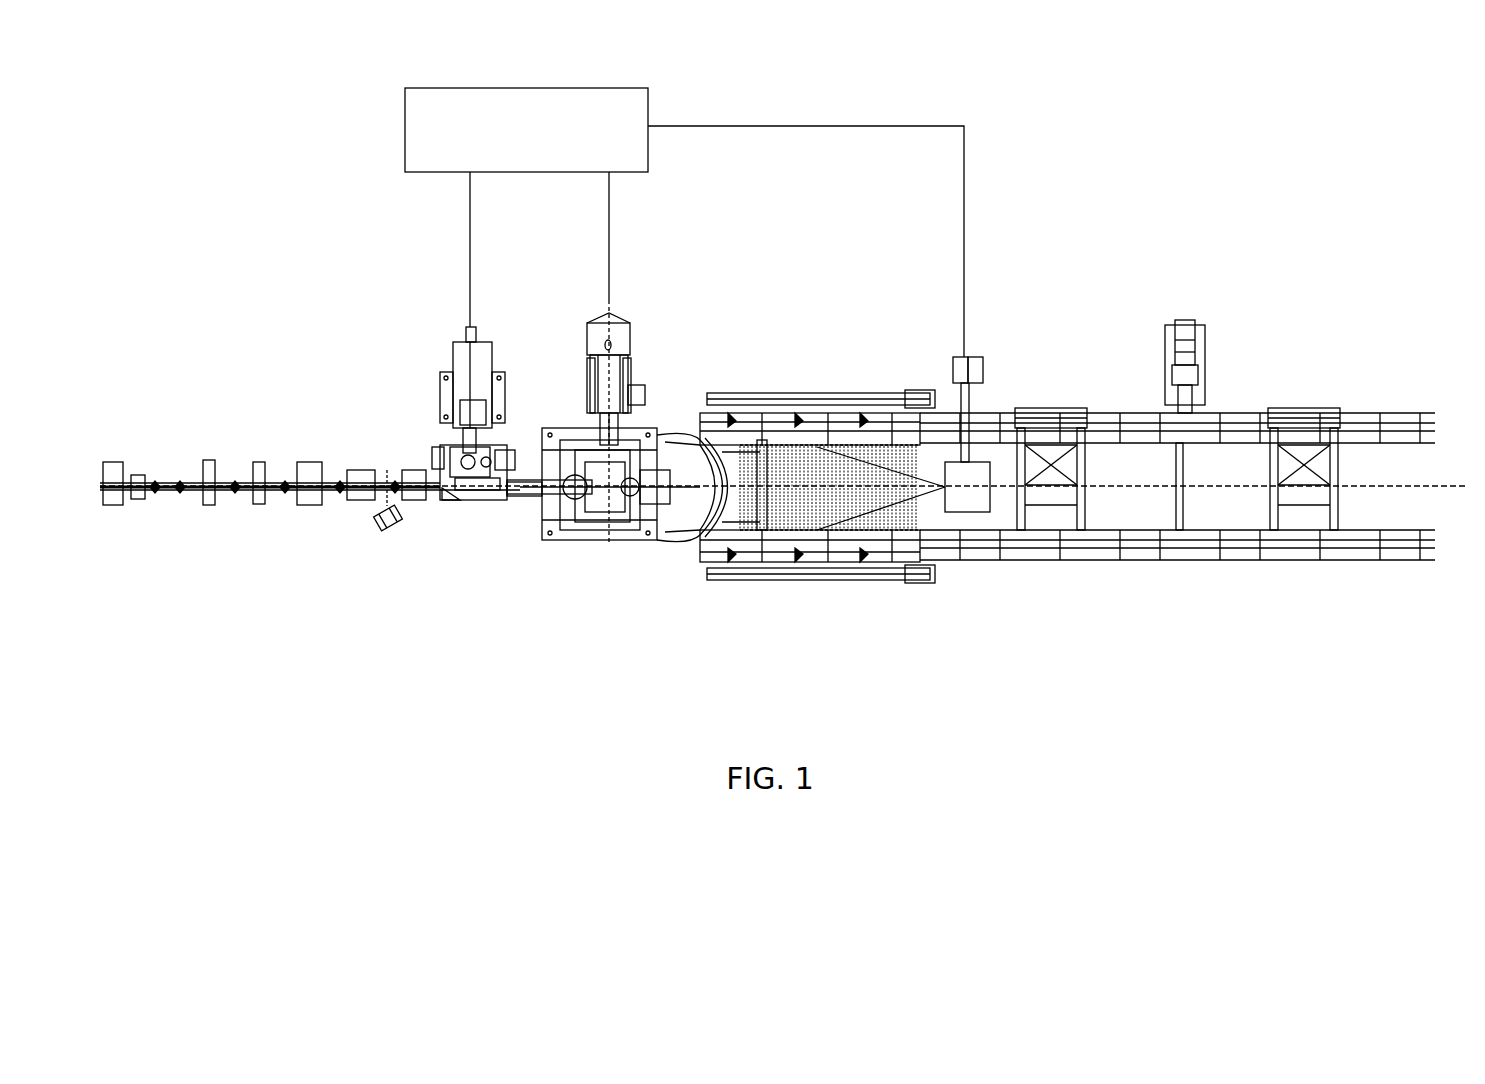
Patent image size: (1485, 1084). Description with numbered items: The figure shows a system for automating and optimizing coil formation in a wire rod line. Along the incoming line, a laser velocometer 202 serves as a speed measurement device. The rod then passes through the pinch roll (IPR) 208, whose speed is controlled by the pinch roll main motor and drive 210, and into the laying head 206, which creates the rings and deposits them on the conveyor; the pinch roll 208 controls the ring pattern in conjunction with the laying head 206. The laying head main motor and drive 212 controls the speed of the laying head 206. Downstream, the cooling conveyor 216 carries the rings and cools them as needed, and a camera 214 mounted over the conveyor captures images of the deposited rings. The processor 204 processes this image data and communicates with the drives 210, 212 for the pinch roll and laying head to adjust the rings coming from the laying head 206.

The laser velocometer 202 is at (370, 533).
The processor 204 is at (684, 222).
The laying head 206 is at (685, 515).
The pinch roll (IPR) 208 is at (461, 485).
The pinch roll (IPR) main motor and drive 210 is at (446, 340).
The laying head main motor and drive 212 is at (640, 332).
The camera 214 is at (965, 487).
The cooling conveyor 216 is at (790, 497).